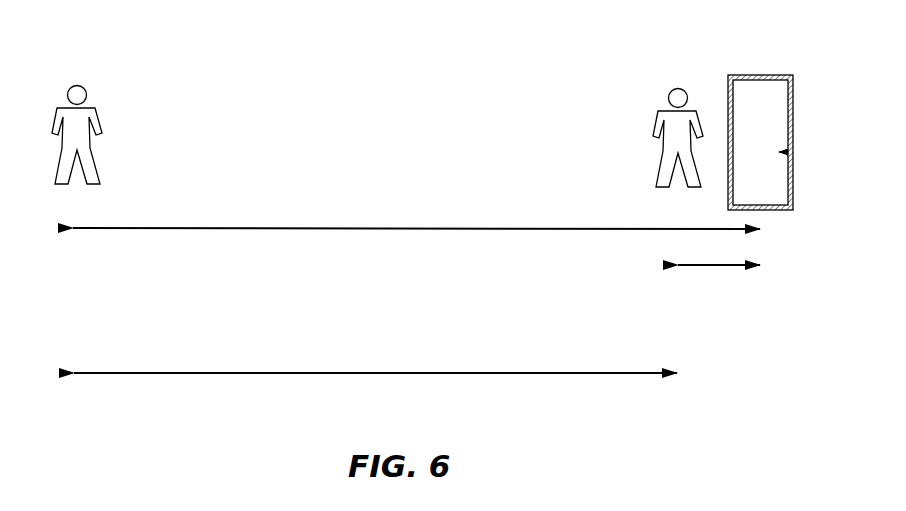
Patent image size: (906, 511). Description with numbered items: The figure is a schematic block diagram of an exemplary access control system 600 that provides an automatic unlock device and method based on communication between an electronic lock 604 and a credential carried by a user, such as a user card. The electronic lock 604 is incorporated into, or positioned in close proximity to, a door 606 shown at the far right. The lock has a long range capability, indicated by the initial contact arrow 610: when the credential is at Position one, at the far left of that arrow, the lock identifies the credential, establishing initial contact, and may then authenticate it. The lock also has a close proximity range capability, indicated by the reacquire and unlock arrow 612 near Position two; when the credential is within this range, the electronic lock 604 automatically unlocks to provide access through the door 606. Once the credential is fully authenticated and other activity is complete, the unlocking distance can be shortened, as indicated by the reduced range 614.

The system 600 is at (196, 58).
The electronic lock 604 is at (796, 150).
The door 606 is at (757, 71).
The initial contact 610 is at (416, 231).
The reacquire and unlock 612 is at (699, 295).
The reduced range 614 is at (375, 375).